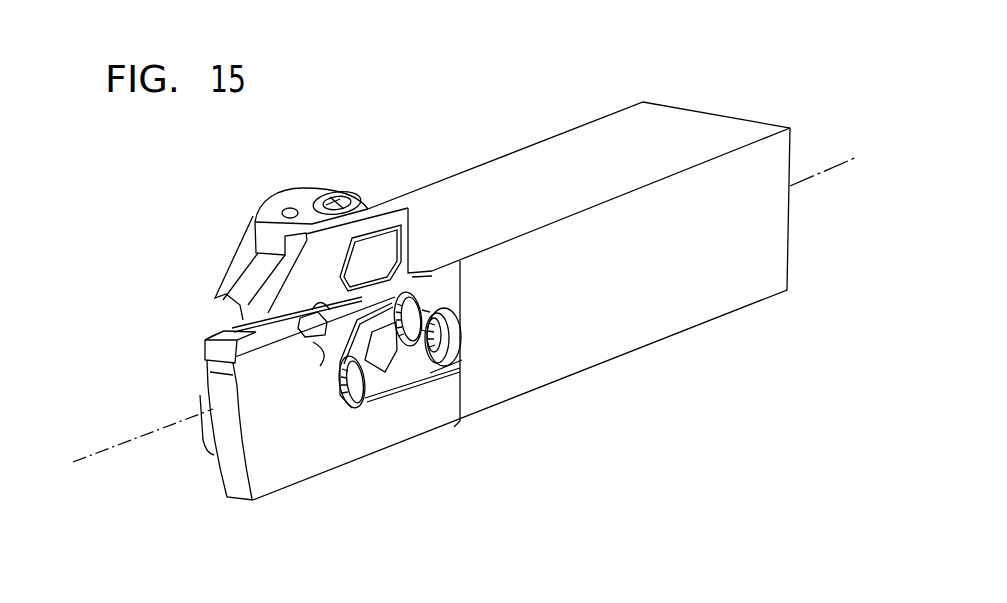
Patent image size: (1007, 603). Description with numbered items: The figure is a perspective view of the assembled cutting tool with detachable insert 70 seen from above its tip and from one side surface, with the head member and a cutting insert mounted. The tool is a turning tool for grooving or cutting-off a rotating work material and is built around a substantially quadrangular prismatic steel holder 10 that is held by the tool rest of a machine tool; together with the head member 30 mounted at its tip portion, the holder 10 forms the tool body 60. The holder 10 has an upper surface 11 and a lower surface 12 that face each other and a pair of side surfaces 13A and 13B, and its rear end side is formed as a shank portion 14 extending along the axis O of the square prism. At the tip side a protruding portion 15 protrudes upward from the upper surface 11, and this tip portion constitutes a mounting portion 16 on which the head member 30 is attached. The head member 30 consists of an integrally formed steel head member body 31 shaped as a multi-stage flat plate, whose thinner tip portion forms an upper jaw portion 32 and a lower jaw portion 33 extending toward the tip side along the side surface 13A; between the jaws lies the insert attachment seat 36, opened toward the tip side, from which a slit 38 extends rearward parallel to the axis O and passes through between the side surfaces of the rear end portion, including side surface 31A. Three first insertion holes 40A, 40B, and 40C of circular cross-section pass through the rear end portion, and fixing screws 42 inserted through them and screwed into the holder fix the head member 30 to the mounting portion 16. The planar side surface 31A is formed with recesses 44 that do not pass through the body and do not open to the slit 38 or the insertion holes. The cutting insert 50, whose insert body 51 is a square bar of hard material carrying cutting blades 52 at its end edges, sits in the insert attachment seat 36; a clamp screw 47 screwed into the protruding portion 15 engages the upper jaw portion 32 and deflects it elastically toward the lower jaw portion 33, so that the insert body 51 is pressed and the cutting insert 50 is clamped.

The holder 10 is at (609, 106).
The upper surface 11 is at (684, 127).
The lower surface 12 is at (693, 335).
The side surface 13A is at (770, 265).
The side surface 13B is at (541, 138).
The shank portion 14 is at (760, 111).
The protruding portion 15 is at (246, 248).
The mounting portion 16 is at (427, 402).
The head member 30 is at (423, 214).
The head member body 31 is at (300, 204).
The side surface 31A is at (433, 380).
The upper jaw portion 32 is at (272, 287).
The lower jaw portion 33 is at (273, 470).
The insert attachment seat 36 is at (289, 370).
The slit 38 is at (340, 303).
The first insertion hole 40A is at (348, 408).
The first insertion hole 40B is at (436, 300).
The first insertion hole 40C is at (448, 318).
The fixing screw 42 is at (421, 297).
The recess 44 is at (425, 211).
The clamp screw 47 is at (303, 195).
The cutting insert 50 is at (212, 331).
The insert body 51 is at (268, 350).
The cutting blade 52 is at (205, 350).
The tool body 60 is at (545, 24).
The cutting tool with detachable insert 70 is at (379, 44).
The axis O is at (112, 445).